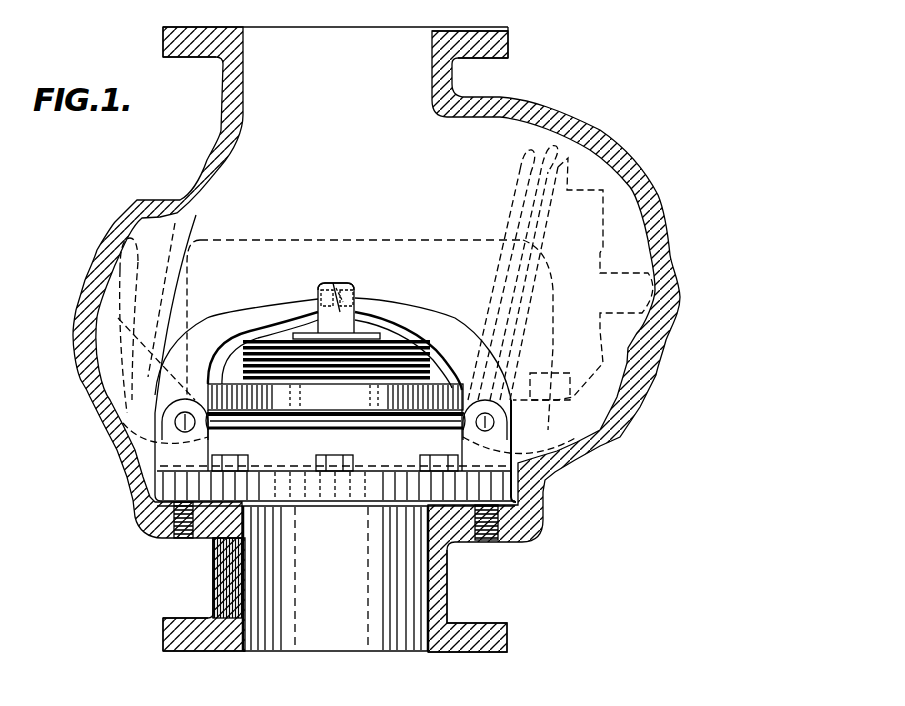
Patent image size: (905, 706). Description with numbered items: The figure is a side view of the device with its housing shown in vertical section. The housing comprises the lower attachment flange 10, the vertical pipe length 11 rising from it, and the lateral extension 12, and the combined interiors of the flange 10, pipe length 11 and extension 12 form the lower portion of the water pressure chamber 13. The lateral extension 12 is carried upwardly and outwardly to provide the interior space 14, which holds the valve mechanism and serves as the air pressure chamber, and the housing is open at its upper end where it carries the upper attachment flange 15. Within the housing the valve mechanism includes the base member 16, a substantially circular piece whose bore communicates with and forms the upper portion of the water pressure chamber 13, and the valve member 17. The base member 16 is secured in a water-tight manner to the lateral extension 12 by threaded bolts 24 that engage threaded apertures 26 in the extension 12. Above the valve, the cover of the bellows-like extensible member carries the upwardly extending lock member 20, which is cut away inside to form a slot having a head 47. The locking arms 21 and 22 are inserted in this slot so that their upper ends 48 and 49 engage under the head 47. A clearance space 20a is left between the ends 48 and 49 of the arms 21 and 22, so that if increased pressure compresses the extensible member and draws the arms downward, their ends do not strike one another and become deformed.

The lower attachment flange 10 is at (503, 640).
The vertical pipe length 11 is at (447, 582).
The lateral extension 12 is at (543, 520).
The water pressure chamber 13 is at (335, 578).
The interior space 14 is at (361, 133).
The upper attachment flange 15 is at (508, 43).
The base member 16 is at (150, 494).
The valve member 17 is at (335, 381).
The lock member 20 is at (338, 308).
The space between the arms 20a is at (340, 275).
The locking arm 21 is at (423, 318).
The locking arm 22 is at (228, 323).
The threaded bolts 24 is at (233, 457).
The threaded apertures 26 is at (162, 542).
The head 47 is at (345, 290).
The upper end of locking arm 48 is at (355, 300).
The upper end of locking arm 49 is at (319, 297).